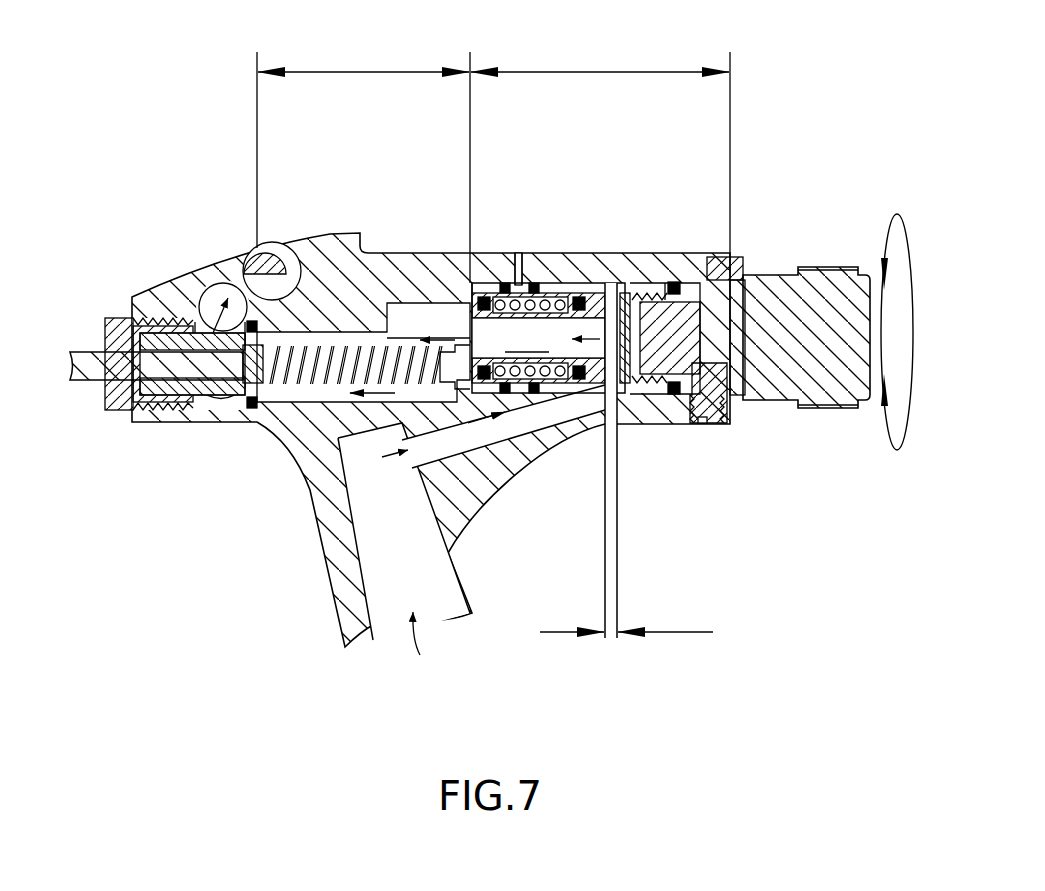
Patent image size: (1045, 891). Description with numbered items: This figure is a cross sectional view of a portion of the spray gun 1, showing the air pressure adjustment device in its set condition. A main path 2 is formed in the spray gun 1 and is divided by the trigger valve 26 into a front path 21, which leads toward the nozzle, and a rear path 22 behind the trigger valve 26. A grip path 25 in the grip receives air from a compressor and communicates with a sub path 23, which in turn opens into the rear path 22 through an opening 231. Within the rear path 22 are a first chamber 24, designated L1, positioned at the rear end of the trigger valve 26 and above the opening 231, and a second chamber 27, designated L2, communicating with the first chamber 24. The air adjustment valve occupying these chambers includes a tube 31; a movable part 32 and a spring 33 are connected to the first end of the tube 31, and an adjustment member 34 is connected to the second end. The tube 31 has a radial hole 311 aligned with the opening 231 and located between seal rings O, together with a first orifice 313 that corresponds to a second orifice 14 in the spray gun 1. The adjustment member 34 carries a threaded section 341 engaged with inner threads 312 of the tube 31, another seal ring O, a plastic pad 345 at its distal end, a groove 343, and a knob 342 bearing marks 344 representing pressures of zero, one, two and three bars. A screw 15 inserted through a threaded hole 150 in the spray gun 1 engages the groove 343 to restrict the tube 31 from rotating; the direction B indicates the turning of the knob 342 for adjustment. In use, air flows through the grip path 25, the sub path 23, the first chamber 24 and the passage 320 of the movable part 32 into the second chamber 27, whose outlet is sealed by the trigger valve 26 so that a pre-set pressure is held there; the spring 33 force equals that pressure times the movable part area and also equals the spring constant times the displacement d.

The spray gun 1 is at (301, 483).
The main path 2 is at (431, 416).
The rear path 22 is at (403, 322).
The front path 21 is at (297, 243).
The sub path 23 is at (462, 465).
The first chamber 24 is at (752, 277).
The grip path 25 is at (375, 570).
The trigger valve 26 is at (92, 383).
The second chamber 27 is at (297, 403).
The tube 31 is at (558, 283).
The movable part 32 is at (470, 322).
The spring 33 is at (527, 395).
The adjustment member 34 is at (804, 345).
The second orifice 14 is at (519, 283).
The screw 15 is at (673, 483).
The threaded hole 150 is at (672, 427).
The opening 231 is at (581, 398).
The radial hole 311 is at (603, 290).
The inner threads 312 is at (668, 283).
The first orifice 313 is at (489, 283).
The passage 320 is at (538, 338).
The threaded section 341 is at (672, 204).
The knob 342 is at (855, 267).
The groove 343 is at (729, 425).
The marks 344 is at (783, 268).
The plastic pad 345 is at (632, 290).
The seal ring O is at (472, 292).
The rotation direction B is at (800, 140).
The first chamber length L1 is at (600, 156).
The second chamber length L2 is at (363, 159).
The displacement d is at (610, 627).